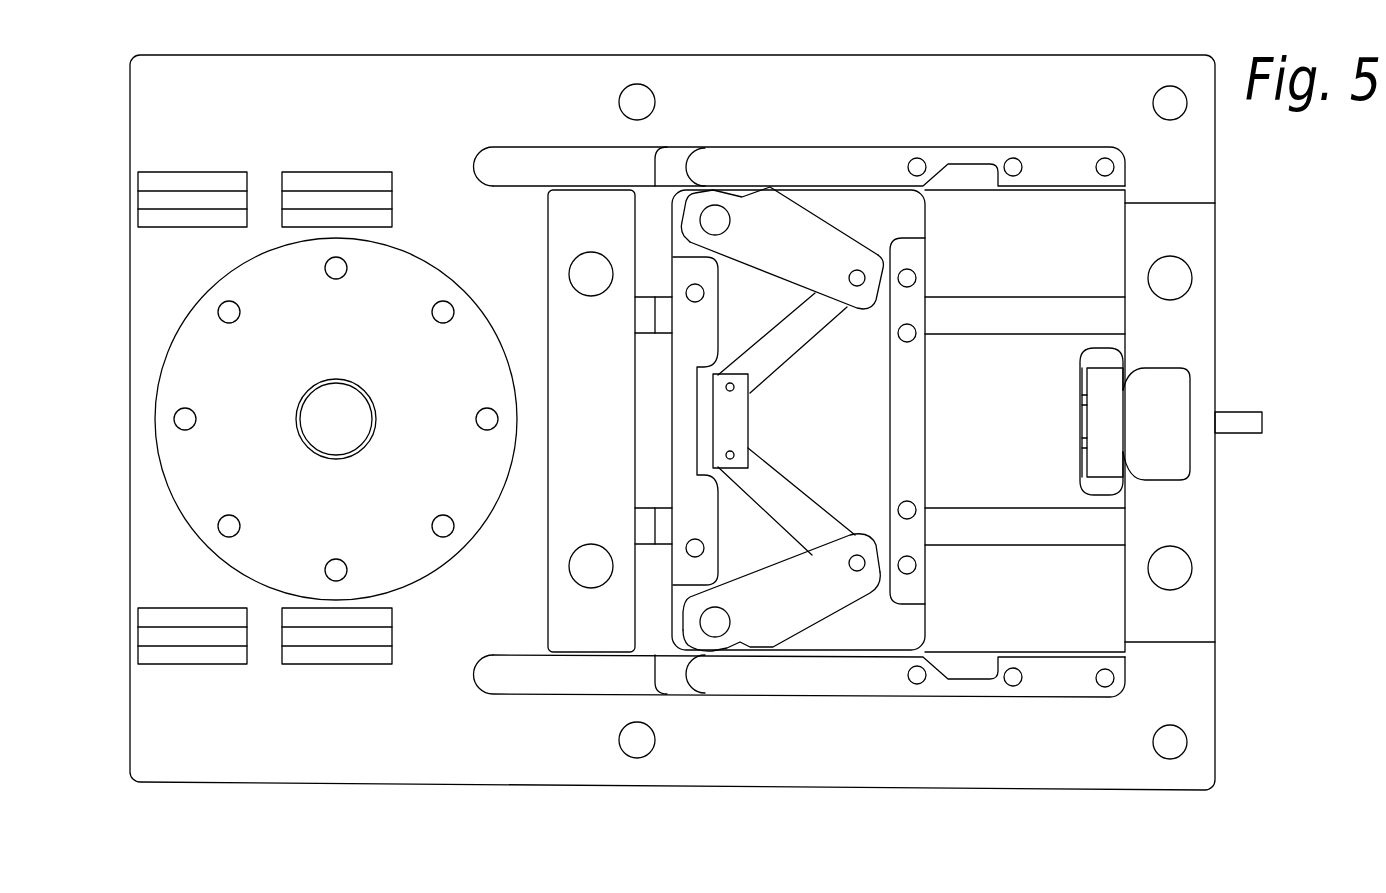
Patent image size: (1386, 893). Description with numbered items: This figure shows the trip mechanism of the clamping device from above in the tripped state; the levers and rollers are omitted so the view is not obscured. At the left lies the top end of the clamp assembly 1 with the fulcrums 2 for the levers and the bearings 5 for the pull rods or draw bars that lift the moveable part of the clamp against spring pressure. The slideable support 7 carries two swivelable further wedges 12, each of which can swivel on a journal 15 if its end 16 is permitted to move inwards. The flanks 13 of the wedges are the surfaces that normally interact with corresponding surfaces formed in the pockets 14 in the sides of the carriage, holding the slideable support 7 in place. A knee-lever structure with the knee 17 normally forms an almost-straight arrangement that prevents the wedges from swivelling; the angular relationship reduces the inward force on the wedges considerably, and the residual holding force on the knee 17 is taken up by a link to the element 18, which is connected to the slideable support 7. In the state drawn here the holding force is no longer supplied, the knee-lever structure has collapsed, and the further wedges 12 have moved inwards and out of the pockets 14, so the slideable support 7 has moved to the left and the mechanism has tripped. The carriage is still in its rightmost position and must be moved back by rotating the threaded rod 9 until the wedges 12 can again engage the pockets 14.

The clamp assembly 1 is at (240, 378).
The fulcrum 2 is at (223, 58).
The bearing 5 is at (397, 58).
The slideable support 7 is at (862, 215).
The threaded rod 9 is at (1247, 432).
The further wedge 12 is at (793, 247).
The flank 13 is at (753, 197).
The pocket 14 is at (950, 178).
The journal 15 is at (707, 220).
The end of wedge 16 is at (852, 273).
The knee 17 is at (878, 333).
The element 18 is at (895, 423).